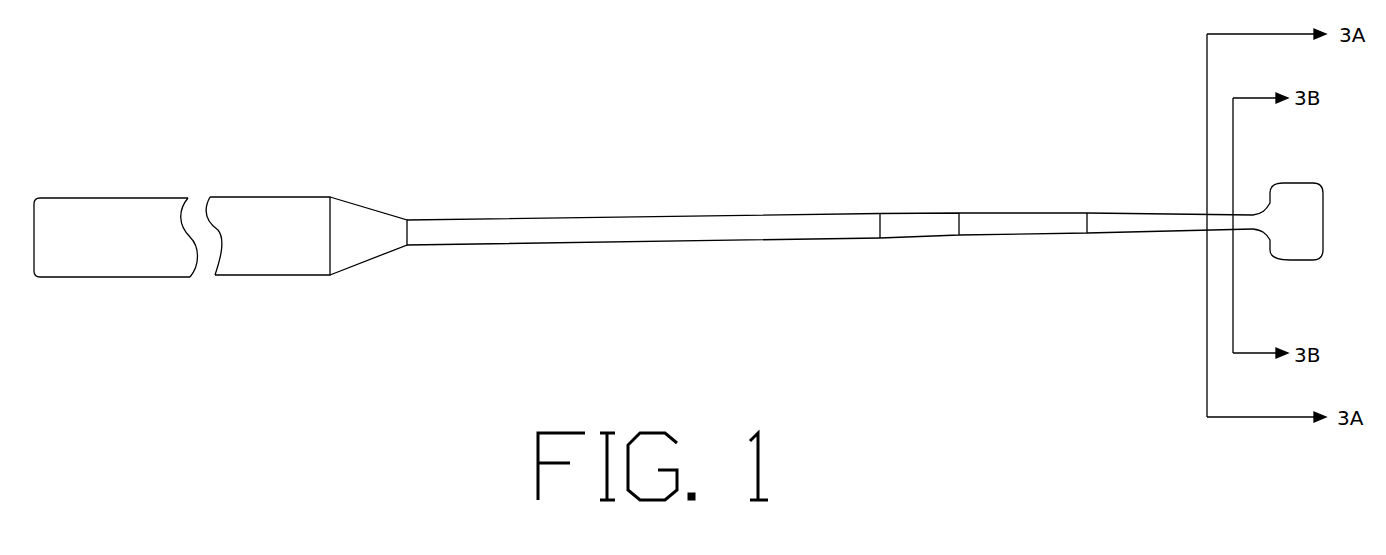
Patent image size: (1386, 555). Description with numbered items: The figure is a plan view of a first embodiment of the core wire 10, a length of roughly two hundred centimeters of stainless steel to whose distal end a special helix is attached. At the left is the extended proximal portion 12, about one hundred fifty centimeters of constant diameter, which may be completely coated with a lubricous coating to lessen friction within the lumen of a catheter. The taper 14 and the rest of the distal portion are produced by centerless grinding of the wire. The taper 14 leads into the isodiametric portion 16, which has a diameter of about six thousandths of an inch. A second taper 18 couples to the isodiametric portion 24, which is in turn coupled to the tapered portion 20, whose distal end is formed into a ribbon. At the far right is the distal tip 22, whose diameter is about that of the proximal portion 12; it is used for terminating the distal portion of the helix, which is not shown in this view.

The core wire 10 is at (627, 132).
The extended proximal portion 12 is at (240, 213).
The taper 14 is at (357, 217).
The isodiametric portion 16 is at (705, 227).
The second taper 18 is at (907, 223).
The tapered portion 20 is at (1152, 220).
The distal tip 22 is at (1313, 207).
The isodiametric portion 24 is at (1008, 228).